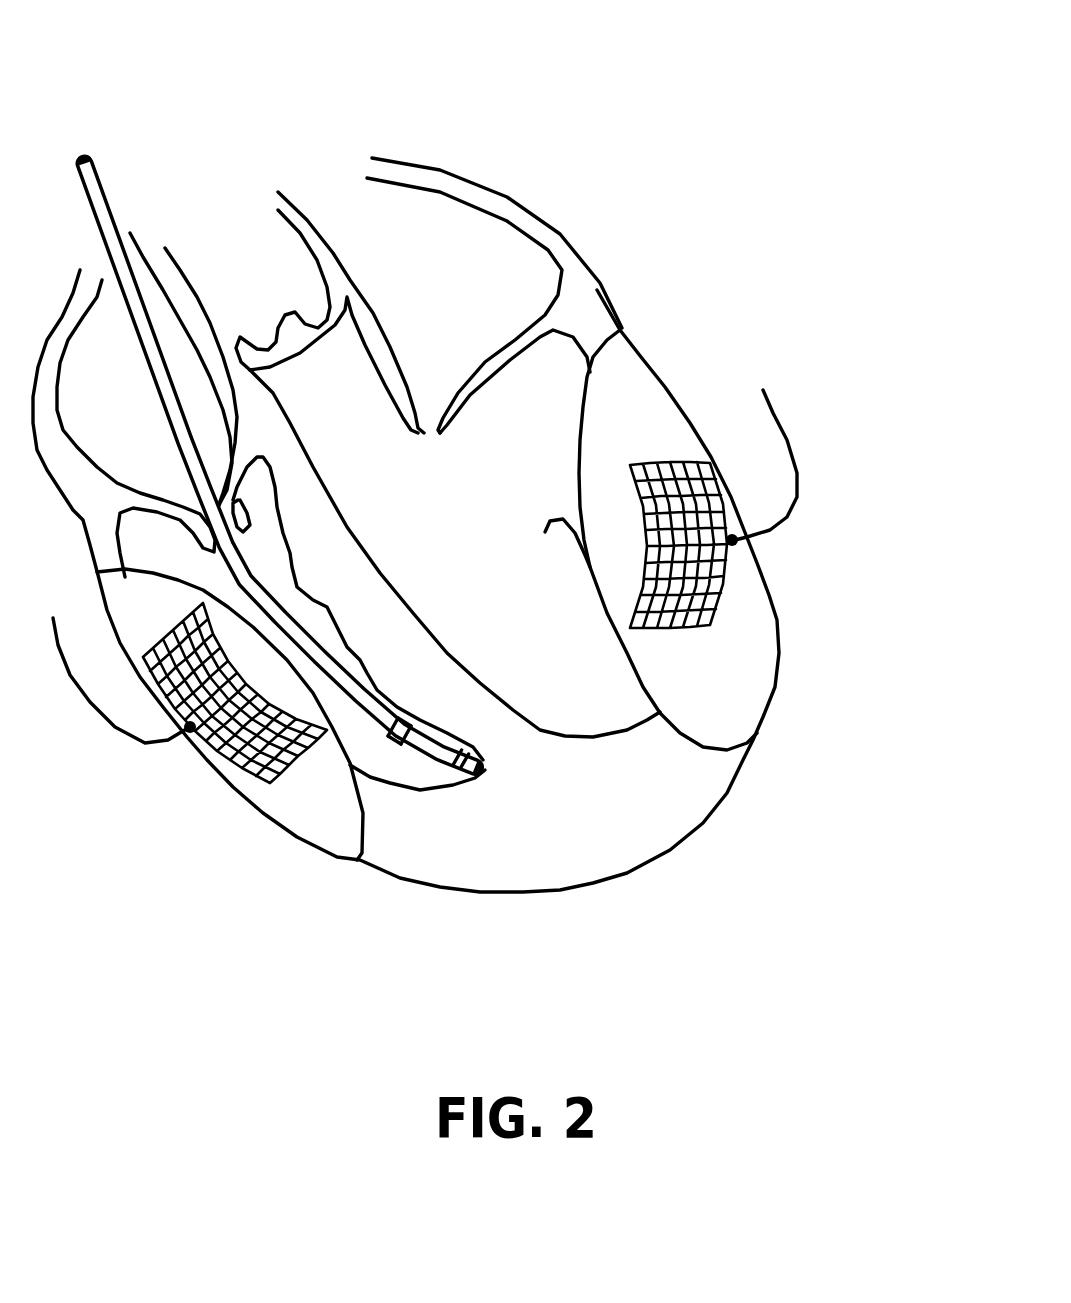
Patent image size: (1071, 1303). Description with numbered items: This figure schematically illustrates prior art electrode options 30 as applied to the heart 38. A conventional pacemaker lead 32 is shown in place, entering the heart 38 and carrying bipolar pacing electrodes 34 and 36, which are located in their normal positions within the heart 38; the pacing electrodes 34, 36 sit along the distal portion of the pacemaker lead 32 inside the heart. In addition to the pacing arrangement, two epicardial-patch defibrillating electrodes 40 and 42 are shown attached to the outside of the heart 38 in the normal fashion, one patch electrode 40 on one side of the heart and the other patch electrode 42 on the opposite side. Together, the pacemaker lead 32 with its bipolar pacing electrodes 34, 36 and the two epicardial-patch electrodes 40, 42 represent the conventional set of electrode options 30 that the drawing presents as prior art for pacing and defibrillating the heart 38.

The electrode options 30 is at (593, 68).
The pacemaker lead 32 is at (280, 451).
The bipolar pacing electrode 34 is at (522, 714).
The bipolar pacing electrode 36 is at (460, 681).
The heart 38 is at (542, 295).
The epicardial-patch defibrillating electrode 40 is at (221, 730).
The epicardial-patch defibrillating electrode 42 is at (761, 572).